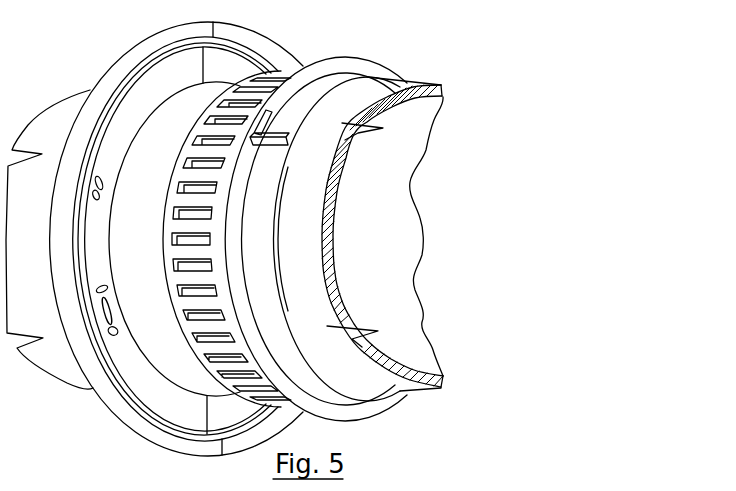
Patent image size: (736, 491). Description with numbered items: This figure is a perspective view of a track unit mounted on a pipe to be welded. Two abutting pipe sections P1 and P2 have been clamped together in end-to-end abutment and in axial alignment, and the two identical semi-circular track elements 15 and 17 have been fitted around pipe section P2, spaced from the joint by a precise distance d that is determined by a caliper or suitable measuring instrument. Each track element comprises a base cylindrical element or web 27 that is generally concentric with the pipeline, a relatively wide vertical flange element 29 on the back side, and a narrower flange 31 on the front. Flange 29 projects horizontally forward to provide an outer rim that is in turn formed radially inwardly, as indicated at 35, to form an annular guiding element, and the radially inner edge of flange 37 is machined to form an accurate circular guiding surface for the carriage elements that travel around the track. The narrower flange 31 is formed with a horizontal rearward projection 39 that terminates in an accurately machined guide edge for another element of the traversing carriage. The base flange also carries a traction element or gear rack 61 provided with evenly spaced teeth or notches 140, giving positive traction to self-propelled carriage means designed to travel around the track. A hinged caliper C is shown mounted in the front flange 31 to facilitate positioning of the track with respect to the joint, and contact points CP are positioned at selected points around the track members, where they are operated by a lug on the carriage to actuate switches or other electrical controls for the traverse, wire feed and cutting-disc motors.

The track element 15 is at (136, 46).
The track element 17 is at (260, 31).
The base cylindrical element or web 27 is at (190, 136).
The vertical flange element 29 is at (190, 88).
The narrower flange 31 is at (358, 68).
The annular guiding element 35 is at (231, 23).
The flange 37 is at (214, 40).
The horizontal rearward projection 39 is at (324, 60).
The traction element or gear rack 61 is at (185, 174).
The teeth or notches 140 is at (176, 260).
The contact points CP is at (102, 176).
The hinged caliper C is at (272, 130).
The pipe section P1 is at (278, 197).
The pipe section P2 is at (281, 232).
The distance d is at (268, 262).